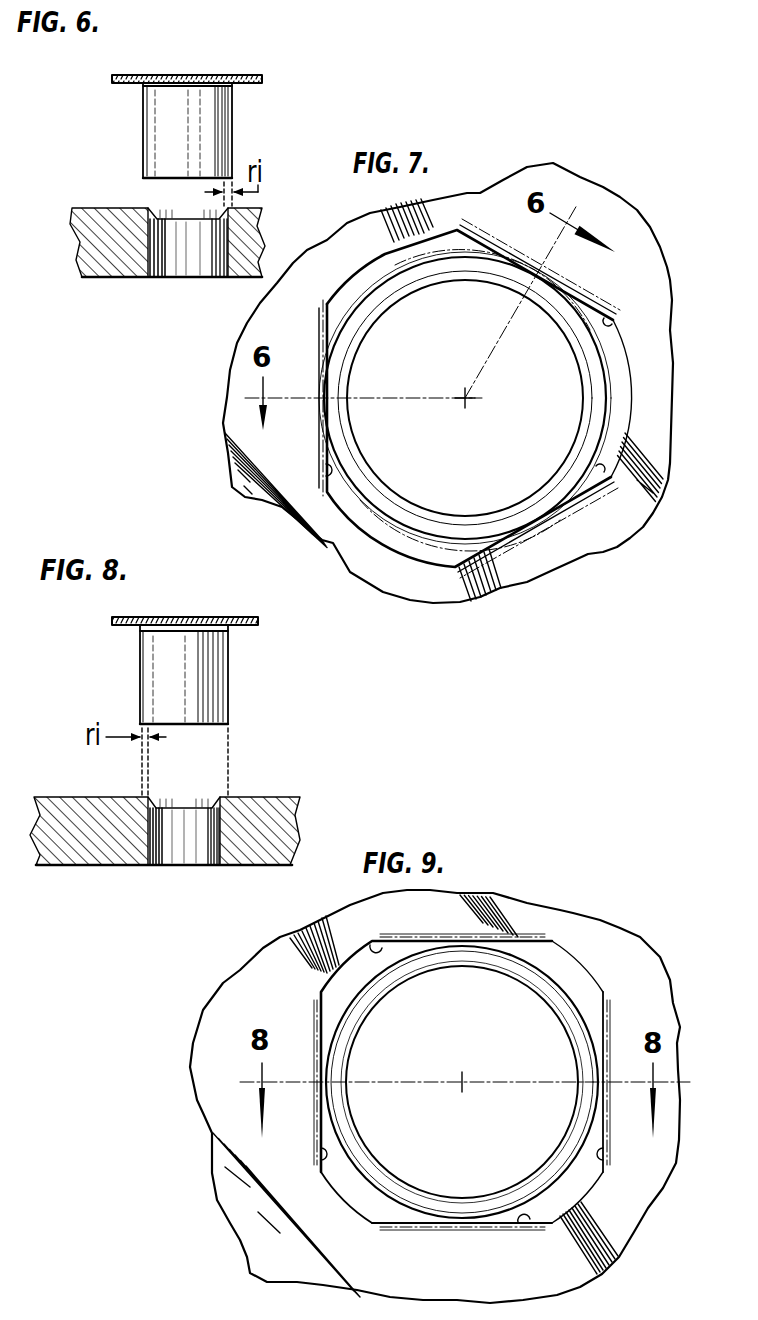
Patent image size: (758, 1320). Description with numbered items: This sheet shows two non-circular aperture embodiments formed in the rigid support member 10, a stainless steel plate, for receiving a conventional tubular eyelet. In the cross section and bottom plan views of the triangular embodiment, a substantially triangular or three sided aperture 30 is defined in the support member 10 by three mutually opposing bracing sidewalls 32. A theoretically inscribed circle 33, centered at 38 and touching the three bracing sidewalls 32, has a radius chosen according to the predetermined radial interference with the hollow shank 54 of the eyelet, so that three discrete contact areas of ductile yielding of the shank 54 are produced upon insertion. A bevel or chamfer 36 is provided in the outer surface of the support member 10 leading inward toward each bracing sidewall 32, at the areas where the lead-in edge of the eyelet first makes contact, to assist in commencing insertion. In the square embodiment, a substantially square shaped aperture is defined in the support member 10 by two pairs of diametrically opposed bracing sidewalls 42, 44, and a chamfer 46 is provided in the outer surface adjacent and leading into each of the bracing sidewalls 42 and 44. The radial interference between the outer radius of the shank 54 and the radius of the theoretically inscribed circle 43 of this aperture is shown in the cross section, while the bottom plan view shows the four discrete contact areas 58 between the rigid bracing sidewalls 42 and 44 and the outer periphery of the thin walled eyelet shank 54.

In FIG. 7, the rigid support member 10 is at (584, 190).
In FIG. 9, the rigid support member 10 is at (578, 932).
In FIG. 6, the substantially triangular aperture 30 is at (166, 190).
In FIG. 7, the substantially triangular aperture 30 is at (622, 344).
In FIG. 6, the bracing sidewalls 32 is at (152, 252).
In FIG. 7, the bracing sidewalls 32 is at (610, 318).
In FIG. 7, the theoretically inscribed circle 33 is at (608, 397).
In FIG. 6, the chamfer 36 is at (148, 204).
In FIG. 7, the center of inscribed circle 38 is at (466, 408).
In FIG. 8, the bracing sidewalls 42 is at (150, 862).
In FIG. 9, the bracing sidewalls 42 is at (325, 1156).
In FIG. 9, the theoretically inscribed circle 43 is at (574, 1010).
In FIG. 9, the bracing sidewalls 44 is at (377, 946).
In FIG. 8, the chamfer 46 is at (146, 795).
In FIG. 6, the hollow shank 54 is at (236, 140).
In FIG. 7, the hollow shank 54 is at (592, 432).
In FIG. 8, the hollow shank 54 is at (230, 670).
In FIG. 9, the hollow shank 54 is at (578, 1148).
In FIG. 7, the discrete contact areas 58 is at (523, 258).
In FIG. 9, the discrete contact areas 58 is at (470, 944).